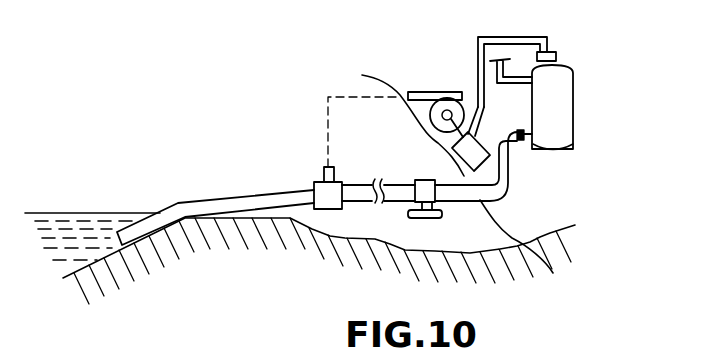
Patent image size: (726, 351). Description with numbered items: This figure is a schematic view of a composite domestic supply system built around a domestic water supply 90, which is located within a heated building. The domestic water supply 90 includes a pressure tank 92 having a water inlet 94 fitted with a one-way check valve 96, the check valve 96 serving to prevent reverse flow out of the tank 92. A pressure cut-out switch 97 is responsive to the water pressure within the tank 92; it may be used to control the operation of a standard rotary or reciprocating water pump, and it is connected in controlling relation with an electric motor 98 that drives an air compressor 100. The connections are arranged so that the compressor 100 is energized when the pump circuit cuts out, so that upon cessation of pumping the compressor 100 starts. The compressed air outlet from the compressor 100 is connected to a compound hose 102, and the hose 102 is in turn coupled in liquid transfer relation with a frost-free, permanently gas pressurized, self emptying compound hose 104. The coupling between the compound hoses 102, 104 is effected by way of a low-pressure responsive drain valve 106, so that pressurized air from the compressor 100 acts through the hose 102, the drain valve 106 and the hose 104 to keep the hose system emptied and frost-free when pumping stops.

The domestic water supply 90 is at (594, 110).
The pressure tank 92 is at (573, 135).
The water inlet 94 is at (525, 139).
The one-way check valve 96 is at (522, 145).
The pressure cut-out switch 97 is at (558, 58).
The electric motor 98 is at (400, 95).
The air compressor 100 is at (448, 92).
The compound hose 102 is at (239, 197).
The compound hose 104 is at (526, 257).
The low-pressure responsive drain valve 106 is at (416, 180).